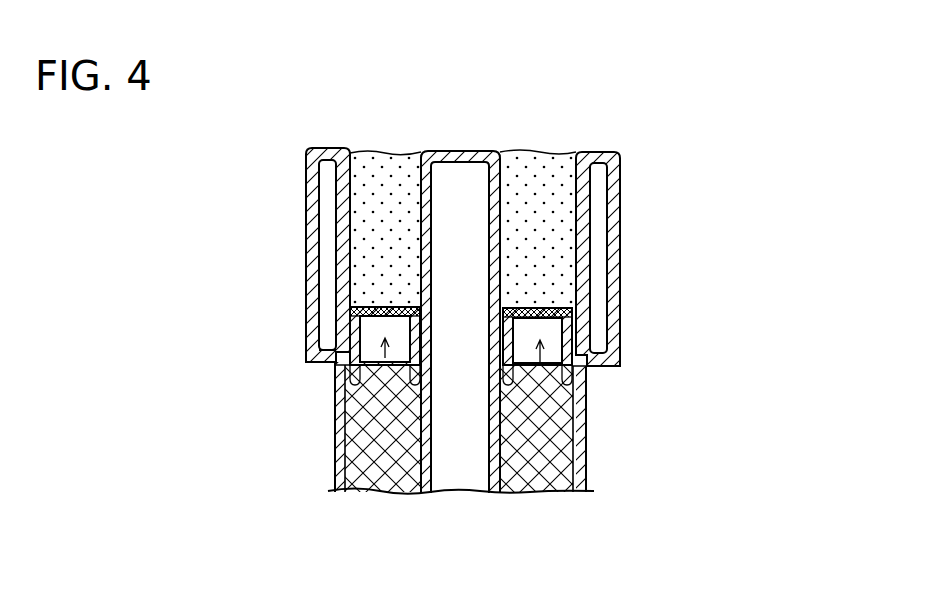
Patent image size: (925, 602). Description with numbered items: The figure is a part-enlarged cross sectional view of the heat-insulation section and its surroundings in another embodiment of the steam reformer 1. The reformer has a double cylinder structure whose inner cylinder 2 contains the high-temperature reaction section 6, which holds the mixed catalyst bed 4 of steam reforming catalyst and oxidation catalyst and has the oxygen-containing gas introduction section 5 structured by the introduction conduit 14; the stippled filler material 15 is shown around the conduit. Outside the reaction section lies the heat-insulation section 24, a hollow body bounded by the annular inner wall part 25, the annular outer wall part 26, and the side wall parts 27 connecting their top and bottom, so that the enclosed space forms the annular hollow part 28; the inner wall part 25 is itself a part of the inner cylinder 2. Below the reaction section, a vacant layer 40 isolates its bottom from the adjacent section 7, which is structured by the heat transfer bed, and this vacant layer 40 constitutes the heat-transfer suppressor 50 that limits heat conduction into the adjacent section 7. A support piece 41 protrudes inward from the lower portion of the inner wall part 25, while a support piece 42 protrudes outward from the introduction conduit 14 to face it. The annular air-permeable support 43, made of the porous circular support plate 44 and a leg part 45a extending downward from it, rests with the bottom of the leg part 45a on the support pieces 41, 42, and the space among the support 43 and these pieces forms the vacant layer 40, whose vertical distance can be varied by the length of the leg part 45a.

The steam reformer 1 is at (262, 98).
The inner cylinder 2 is at (590, 466).
The mixed catalyst bed 4 is at (551, 170).
The oxygen-containing gas introduction section 5 is at (478, 272).
The high-temperature reaction section 6 is at (556, 190).
The adjacent section 7 is at (547, 467).
The introduction conduit 14 is at (465, 151).
The resin filler 15 is at (502, 243).
The heat-insulation section 24 is at (302, 169).
The inner wall part 25 is at (336, 258).
The outer wall part 26 is at (305, 303).
The side wall parts 27 is at (328, 148).
The annular hollow part 28 is at (323, 219).
The vacant layer 40 is at (336, 475).
The support piece 41 is at (336, 417).
The support piece 42 is at (497, 390).
The air-permeable support 43 is at (380, 300).
The support plate 44 is at (415, 300).
The leg part 45a is at (333, 341).
The heat-transfer suppressor 50 is at (470, 456).